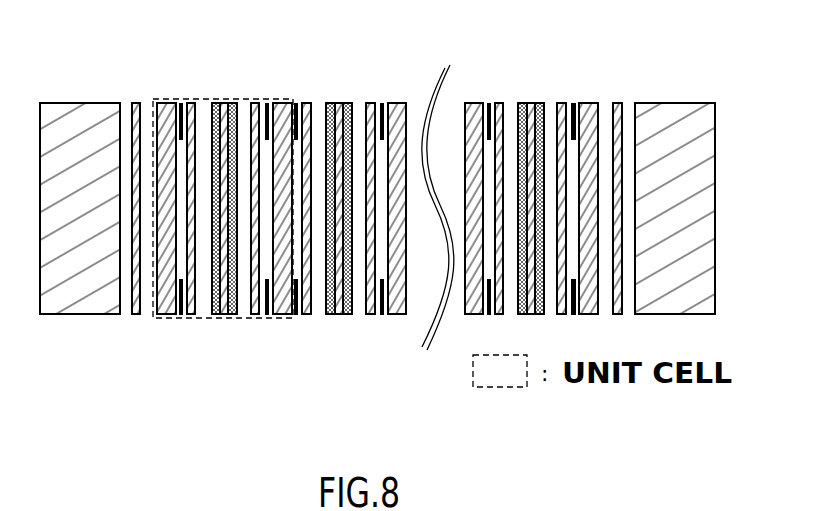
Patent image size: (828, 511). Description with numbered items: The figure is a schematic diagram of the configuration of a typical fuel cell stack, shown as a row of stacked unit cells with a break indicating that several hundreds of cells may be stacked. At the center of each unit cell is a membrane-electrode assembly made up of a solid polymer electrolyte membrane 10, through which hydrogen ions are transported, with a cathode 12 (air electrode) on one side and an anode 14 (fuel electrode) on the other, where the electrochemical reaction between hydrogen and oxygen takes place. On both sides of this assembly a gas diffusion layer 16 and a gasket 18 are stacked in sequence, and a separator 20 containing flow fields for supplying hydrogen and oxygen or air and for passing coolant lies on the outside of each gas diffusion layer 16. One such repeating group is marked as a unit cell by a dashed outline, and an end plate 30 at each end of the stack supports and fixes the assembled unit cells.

The solid polymer electrolyte membrane 10 is at (238, 268).
The cathode 12 is at (261, 256).
The anode 14 is at (201, 268).
The gas diffusion layer 16 is at (240, 162).
The gasket 18 is at (234, 167).
The separator 20 is at (213, 262).
The end plate 30 is at (80, 165).